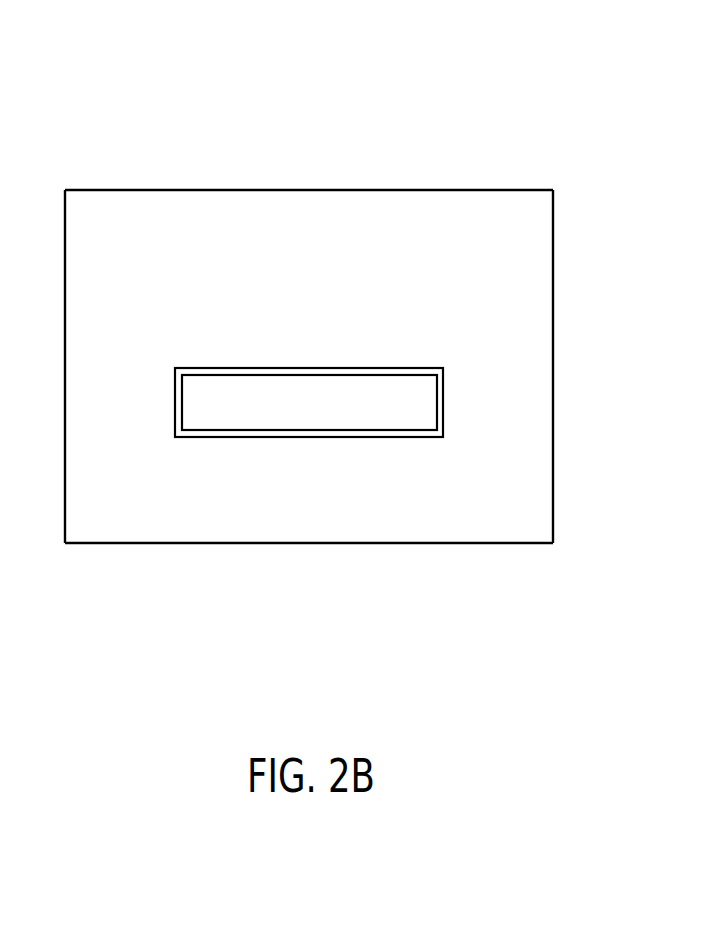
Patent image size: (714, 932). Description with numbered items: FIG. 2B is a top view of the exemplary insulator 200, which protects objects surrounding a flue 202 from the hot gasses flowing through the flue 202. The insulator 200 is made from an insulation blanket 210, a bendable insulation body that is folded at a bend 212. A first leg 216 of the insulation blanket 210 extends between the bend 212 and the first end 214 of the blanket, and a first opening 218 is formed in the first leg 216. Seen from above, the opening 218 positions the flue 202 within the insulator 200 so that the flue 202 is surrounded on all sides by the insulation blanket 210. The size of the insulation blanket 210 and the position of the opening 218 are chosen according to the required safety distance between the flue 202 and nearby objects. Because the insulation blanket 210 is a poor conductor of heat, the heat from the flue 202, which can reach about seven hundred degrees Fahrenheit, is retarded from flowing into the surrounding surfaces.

The insulator 200 is at (548, 92).
The flue 202 is at (190, 403).
The insulation blanket 210 is at (538, 315).
The bend 212 is at (309, 190).
The first end 214 is at (183, 543).
The first leg 216 is at (93, 512).
The first opening 218 is at (308, 367).